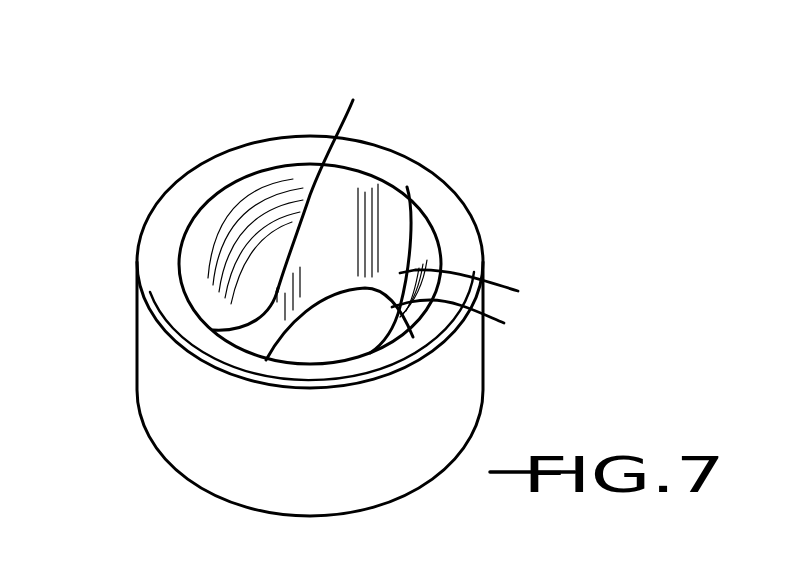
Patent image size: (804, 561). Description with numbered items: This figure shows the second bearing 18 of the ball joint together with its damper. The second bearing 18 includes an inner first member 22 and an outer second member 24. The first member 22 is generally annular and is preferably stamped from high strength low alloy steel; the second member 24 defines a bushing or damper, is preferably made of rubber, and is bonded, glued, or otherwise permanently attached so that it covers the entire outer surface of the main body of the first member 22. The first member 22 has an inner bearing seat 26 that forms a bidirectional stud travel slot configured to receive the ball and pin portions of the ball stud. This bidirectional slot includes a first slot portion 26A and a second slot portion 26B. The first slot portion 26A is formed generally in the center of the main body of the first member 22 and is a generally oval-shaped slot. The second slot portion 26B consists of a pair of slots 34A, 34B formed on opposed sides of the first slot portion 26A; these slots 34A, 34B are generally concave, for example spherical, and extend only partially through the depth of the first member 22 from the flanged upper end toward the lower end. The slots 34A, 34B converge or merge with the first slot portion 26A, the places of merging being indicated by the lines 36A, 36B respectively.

The second bearing 18 is at (548, 270).
The first member 22 is at (253, 157).
The second member 24 is at (377, 487).
The bearing seat 26 is at (395, 200).
The first slot portion 26A is at (277, 292).
The second slot portion 26B is at (205, 270).
The slot 34A is at (476, 299).
The slot 34B is at (208, 240).
The line 36A is at (484, 288).
The line 36B is at (328, 181).